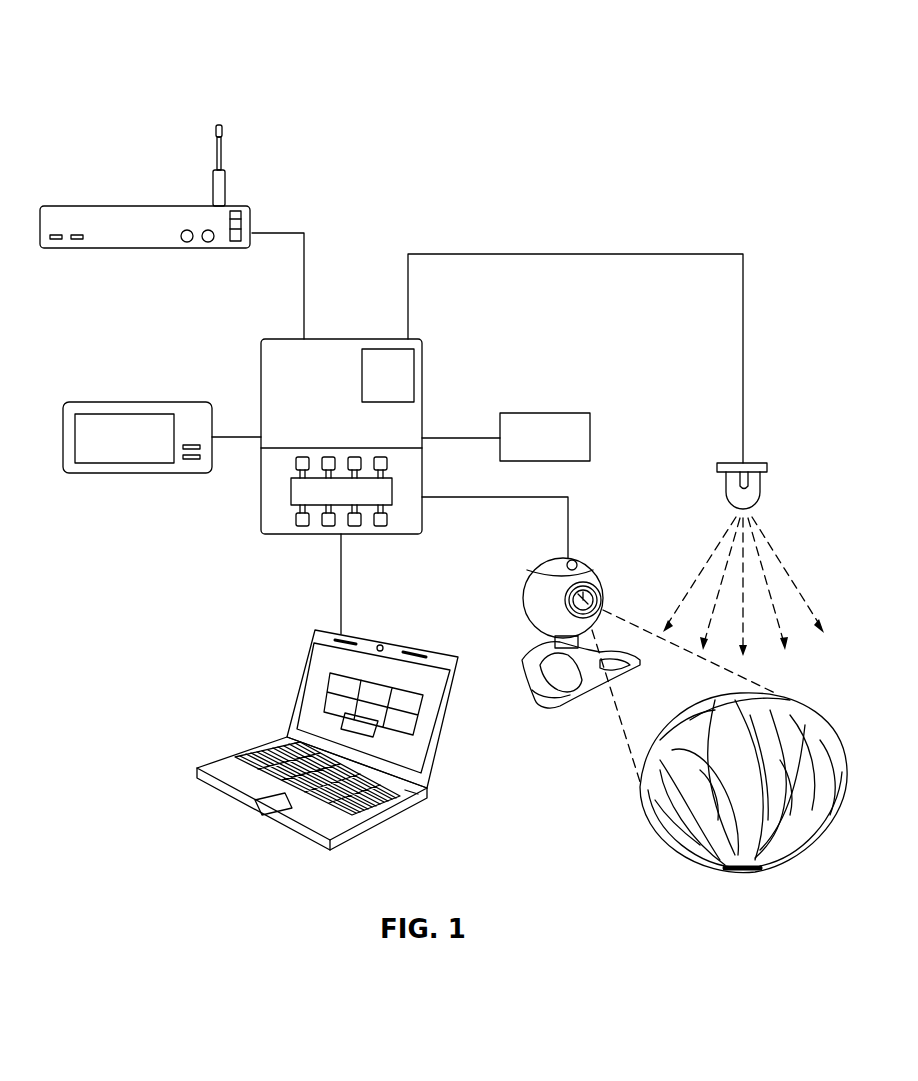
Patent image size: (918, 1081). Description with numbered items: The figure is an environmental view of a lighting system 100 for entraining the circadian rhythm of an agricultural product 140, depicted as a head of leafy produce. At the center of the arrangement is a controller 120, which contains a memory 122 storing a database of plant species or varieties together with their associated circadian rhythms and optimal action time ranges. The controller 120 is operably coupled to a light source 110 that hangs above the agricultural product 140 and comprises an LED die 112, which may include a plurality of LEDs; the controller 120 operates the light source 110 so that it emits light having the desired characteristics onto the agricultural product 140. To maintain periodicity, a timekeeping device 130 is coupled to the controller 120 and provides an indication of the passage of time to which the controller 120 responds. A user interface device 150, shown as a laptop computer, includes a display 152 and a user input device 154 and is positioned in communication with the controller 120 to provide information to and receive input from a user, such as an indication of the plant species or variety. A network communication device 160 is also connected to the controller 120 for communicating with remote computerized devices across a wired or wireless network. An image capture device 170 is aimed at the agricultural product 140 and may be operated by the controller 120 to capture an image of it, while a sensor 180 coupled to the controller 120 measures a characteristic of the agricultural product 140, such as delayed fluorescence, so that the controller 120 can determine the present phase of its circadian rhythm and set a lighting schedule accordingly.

The lighting system 100 is at (146, 39).
The light source 110 is at (744, 540).
The LED die 112 is at (738, 486).
The controller 120 is at (339, 455).
The memory 122 is at (386, 403).
The timekeeping device 130 is at (125, 402).
The agricultural product 140 is at (775, 860).
The user interface device 150 is at (305, 735).
The display 152 is at (330, 697).
The user input device 154 is at (258, 767).
The network communication device 160 is at (78, 205).
The image capture device 170 is at (534, 570).
The sensor 180 is at (545, 413).